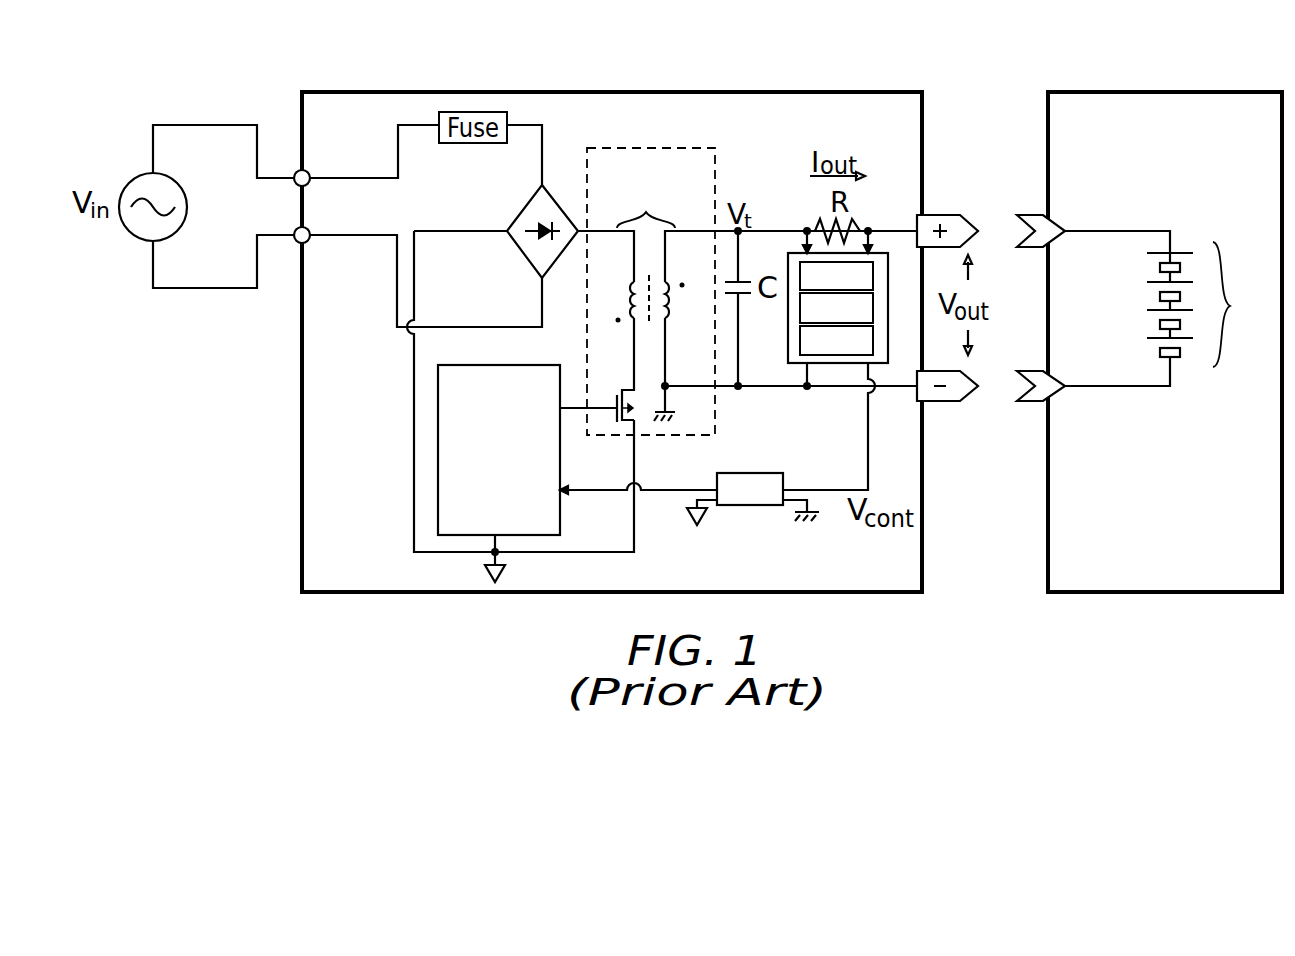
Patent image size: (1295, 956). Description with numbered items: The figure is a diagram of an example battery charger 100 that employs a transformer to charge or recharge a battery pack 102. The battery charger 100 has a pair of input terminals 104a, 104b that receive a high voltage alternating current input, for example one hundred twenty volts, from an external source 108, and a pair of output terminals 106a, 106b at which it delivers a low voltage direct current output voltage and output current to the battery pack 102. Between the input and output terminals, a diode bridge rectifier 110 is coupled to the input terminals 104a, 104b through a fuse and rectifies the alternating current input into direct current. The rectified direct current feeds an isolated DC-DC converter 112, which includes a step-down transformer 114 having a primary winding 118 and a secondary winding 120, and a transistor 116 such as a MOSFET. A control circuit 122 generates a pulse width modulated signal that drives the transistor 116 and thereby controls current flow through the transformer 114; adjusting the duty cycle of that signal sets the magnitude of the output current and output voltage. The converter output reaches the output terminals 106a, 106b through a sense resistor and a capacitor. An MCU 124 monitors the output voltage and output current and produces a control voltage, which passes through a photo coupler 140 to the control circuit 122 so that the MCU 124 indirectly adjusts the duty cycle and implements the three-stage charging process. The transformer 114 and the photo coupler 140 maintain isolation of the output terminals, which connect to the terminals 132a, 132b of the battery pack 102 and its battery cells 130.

The battery charger 100 is at (607, 92).
The battery pack 102 is at (1160, 92).
The input terminal 104a is at (310, 172).
The input terminal 104b is at (310, 243).
The output terminal 106a is at (953, 196).
The output terminal 106b is at (928, 403).
The external source 108 is at (135, 185).
The diode bridge rectifier 110 is at (520, 207).
The isolated DC-DC converter 112 is at (648, 148).
The step-down transformer 114 is at (646, 248).
The transistor 116 is at (622, 392).
The primary winding 118 is at (628, 282).
The secondary winding 120 is at (668, 322).
The control circuit 122 is at (510, 365).
The MCU 124 is at (788, 330).
The battery cells 130 is at (1211, 304).
The battery pack positive terminal 132a is at (1045, 213).
The battery pack negative terminal 132b is at (1030, 403).
The photo coupler 140 is at (785, 478).